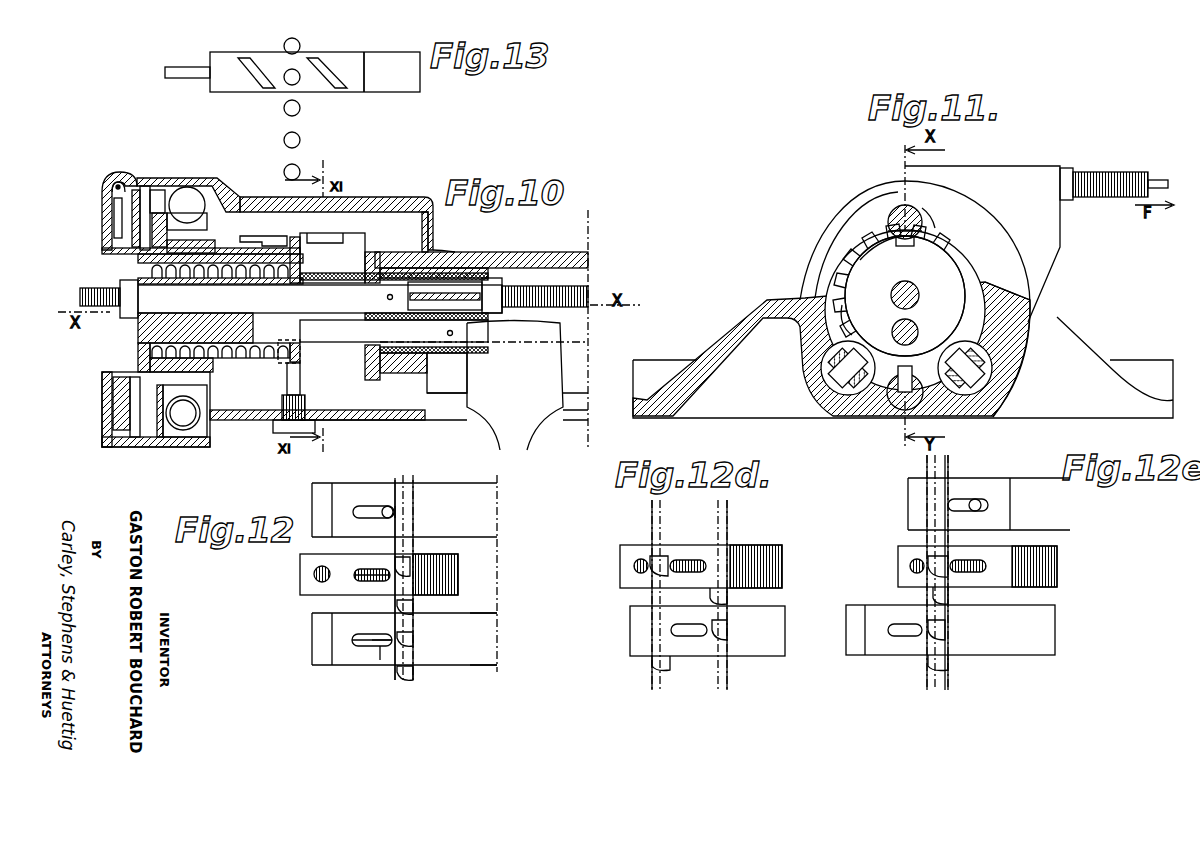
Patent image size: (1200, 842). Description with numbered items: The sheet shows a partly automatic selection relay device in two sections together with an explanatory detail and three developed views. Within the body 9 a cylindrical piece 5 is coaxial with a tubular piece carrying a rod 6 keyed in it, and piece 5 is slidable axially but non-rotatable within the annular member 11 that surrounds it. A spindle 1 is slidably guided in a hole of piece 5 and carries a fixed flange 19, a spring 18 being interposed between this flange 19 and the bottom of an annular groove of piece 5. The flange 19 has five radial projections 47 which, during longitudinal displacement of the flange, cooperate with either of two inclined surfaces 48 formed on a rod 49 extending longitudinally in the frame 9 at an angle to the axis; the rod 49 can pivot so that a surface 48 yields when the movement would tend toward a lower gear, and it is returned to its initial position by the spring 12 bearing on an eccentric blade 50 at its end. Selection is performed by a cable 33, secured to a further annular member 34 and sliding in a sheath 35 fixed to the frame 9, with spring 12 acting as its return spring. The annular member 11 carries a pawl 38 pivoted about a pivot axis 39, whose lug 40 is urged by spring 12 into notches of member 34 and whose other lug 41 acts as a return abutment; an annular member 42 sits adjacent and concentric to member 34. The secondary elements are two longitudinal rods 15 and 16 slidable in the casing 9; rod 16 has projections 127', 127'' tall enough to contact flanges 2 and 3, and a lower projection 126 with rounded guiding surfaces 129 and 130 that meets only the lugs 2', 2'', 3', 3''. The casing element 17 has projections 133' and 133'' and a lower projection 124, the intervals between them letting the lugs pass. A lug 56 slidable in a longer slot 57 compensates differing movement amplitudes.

In FIG. 11, the spindle 1 is at (918, 292).
In FIG. 10, the flange 2 is at (378, 274).
In FIG. 11, the flange 2 is at (962, 296).
In FIG. 12, the flange 2 is at (416, 580).
In FIG. 12D, the flange 2 is at (667, 592).
In FIG. 12E, the flange 2 is at (918, 571).
In FIG. 12, the lug 2' is at (425, 680).
In FIG. 12D, the lug 2' is at (677, 668).
In FIG. 12E, the lug 2' is at (953, 668).
In FIG. 12, the lug 2'' is at (426, 567).
In FIG. 12D, the lug 2'' is at (678, 544).
In FIG. 12E, the lug 2'' is at (957, 553).
In FIG. 10, the flange 3 is at (481, 248).
In FIG. 11, the flange 3 is at (1034, 308).
In FIG. 12, the flange 3 is at (422, 570).
In FIG. 12D, the flange 3 is at (735, 592).
In FIG. 12E, the flange 3 is at (954, 571).
In FIG. 10, the lug 3' is at (403, 397).
In FIG. 12, the lug 3' is at (424, 635).
In FIG. 12D, the lug 3' is at (744, 613).
In FIG. 12E, the lug 3' is at (962, 624).
In FIG. 12, the lug 3'' is at (427, 604).
In FIG. 12D, the lug 3'' is at (704, 594).
In FIG. 12E, the lug 3'' is at (920, 596).
In FIG. 10, the cylindrical piece 5 is at (140, 330).
In FIG. 11, the rod 6 is at (918, 335).
In FIG. 10, the body 9 is at (104, 200).
In FIG. 11, the body 9 is at (975, 190).
In FIG. 10, the annular member 11 is at (207, 232).
In FIG. 10, the spring 12 is at (193, 437).
In FIG. 10, the longitudinal rod 15 is at (455, 375).
In FIG. 11, the longitudinal rod 15 is at (836, 395).
In FIG. 12, the longitudinal rod 15 is at (462, 512).
In FIG. 12E, the longitudinal rod 15 is at (1035, 508).
In FIG. 11, the longitudinal rod 16 is at (985, 385).
In FIG. 12, the longitudinal rod 16 is at (470, 645).
In FIG. 12D, the longitudinal rod 16 is at (637, 628).
In FIG. 12E, the longitudinal rod 16 is at (855, 618).
In FIG. 11, the casing element 17 is at (912, 395).
In FIG. 12, the casing element 17 is at (302, 558).
In FIG. 12D, the casing element 17 is at (622, 560).
In FIG. 12E, the casing element 17 is at (900, 576).
In FIG. 10, the spring 18 is at (228, 362).
In FIG. 10, the flange 19 is at (302, 265).
In FIG. 11, the flange 19 is at (877, 307).
In FIG. 10, the cable 33 is at (118, 185).
In FIG. 11, the cable 33 is at (1150, 180).
In FIG. 10, the annular member 34 is at (112, 186).
In FIG. 11, the sheath 35 is at (1085, 172).
In FIG. 10, the pawl 38 is at (145, 200).
In FIG. 10, the pivot axis 39 is at (160, 195).
In FIG. 10, the lug 40 is at (114, 238).
In FIG. 10, the lug 41 is at (190, 200).
In FIG. 10, the annular member 42 is at (130, 208).
In FIG. 13, the radial projection 47 is at (300, 47).
In FIG. 10, the radial projection 47 is at (280, 246).
In FIG. 11, the radial projection 47 is at (862, 272).
In FIG. 13, the inclined surface 48 is at (340, 72).
In FIG. 10, the inclined surface 48 is at (265, 233).
In FIG. 11, the inclined surface 48 is at (896, 240).
In FIG. 13, the rod 49 is at (383, 67).
In FIG. 10, the rod 49 is at (402, 228).
In FIG. 11, the rod 49 is at (900, 215).
In FIG. 10, the eccentric blade 50 is at (224, 195).
In FIG. 10, the lug 56 is at (335, 362).
In FIG. 12, the lug 56 is at (365, 508).
In FIG. 10, the slot 57 is at (375, 365).
In FIG. 12, the slot 57 is at (390, 508).
In FIG. 12, the projection 124 is at (355, 577).
In FIG. 12, the projection 126 is at (380, 660).
In FIG. 12, the projection 127' is at (297, 637).
In FIG. 12, the projection 127'' is at (513, 642).
In FIG. 12, the rounded guiding surface 129 is at (356, 644).
In FIG. 12, the rounded guiding surface 130 is at (380, 640).
In FIG. 12, the projection 133' is at (296, 575).
In FIG. 12D, the projection 133' is at (629, 541).
In FIG. 12E, the projection 133' is at (894, 550).
In FIG. 12, the projection 133'' is at (487, 575).
In FIG. 12D, the projection 133'' is at (771, 548).
In FIG. 12E, the projection 133'' is at (1061, 566).